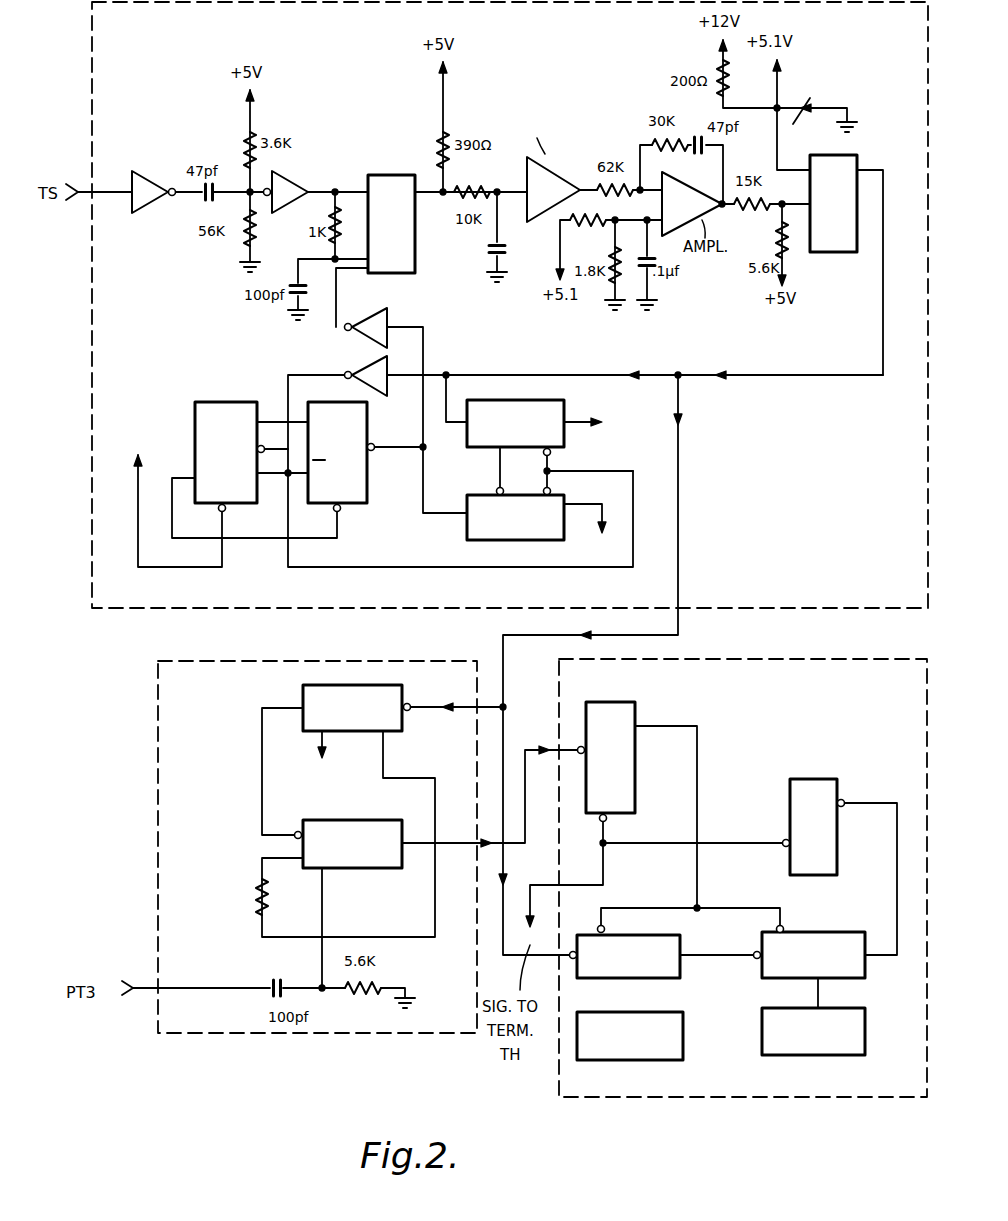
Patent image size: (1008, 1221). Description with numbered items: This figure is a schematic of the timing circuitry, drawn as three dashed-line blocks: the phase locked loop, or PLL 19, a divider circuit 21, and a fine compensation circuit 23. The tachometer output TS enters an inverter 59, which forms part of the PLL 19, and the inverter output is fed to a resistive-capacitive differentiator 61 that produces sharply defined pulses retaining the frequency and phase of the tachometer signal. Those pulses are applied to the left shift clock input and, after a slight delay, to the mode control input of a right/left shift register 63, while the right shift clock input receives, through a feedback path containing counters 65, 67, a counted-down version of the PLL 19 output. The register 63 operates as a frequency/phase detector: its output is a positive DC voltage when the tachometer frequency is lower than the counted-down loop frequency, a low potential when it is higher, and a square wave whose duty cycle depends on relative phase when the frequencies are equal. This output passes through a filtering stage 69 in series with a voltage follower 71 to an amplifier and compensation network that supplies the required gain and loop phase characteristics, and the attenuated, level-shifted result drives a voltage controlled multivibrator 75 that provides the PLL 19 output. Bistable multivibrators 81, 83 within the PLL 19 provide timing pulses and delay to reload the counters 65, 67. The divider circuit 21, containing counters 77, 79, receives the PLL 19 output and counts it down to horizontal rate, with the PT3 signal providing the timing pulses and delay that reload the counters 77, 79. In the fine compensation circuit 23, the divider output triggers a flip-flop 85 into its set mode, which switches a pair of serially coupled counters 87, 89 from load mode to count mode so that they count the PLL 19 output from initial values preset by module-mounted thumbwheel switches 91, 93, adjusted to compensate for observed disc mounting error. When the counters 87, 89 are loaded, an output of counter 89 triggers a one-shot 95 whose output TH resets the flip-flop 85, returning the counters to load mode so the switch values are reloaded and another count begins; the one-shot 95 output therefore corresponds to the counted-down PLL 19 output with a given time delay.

The PLL 19 is at (866, 608).
The divider circuit 21 is at (475, 740).
The fine compensation circuit 23 is at (574, 1109).
The inverter 59 is at (158, 214).
The resistive-capacitive differentiator 61 is at (282, 174).
The right/left shift register 63 is at (388, 175).
The counter 65 is at (564, 437).
The counter 67 is at (480, 495).
The filtering stage 69 is at (505, 202).
The voltage follower 71 is at (552, 174).
The voltage controlled multivibrator 75 is at (832, 252).
The counter 77 is at (303, 698).
The counter 79 is at (352, 820).
The bistable multivibrator 81 is at (198, 402).
The bistable multivibrator 83 is at (367, 490).
The flip-flop 85 is at (670, 706).
The counter 87 is at (668, 978).
The counter 89 is at (762, 975).
The thumbwheel switch 91 is at (683, 1030).
The thumbwheel switch 93 is at (762, 1055).
The one-shot 95 is at (865, 759).